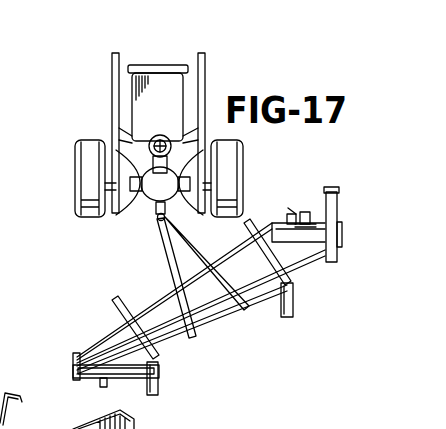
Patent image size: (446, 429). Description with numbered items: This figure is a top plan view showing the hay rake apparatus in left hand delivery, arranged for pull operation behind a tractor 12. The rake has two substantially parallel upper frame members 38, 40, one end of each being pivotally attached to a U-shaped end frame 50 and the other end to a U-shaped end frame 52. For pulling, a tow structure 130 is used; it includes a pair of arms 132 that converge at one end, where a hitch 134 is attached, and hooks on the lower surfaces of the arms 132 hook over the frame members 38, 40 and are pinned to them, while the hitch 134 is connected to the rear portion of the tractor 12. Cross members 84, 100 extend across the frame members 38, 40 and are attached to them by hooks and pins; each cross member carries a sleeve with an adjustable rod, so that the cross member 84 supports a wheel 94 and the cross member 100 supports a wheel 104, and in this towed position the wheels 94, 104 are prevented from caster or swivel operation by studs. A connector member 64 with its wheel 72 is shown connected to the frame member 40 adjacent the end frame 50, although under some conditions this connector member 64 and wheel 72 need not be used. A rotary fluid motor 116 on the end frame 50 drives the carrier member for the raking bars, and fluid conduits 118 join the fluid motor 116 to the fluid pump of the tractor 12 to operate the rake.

The tractor 12 is at (167, 100).
The hitch 134 is at (158, 219).
The upper frame member 38 is at (103, 340).
The upper frame member 40 is at (170, 342).
The U-shaped end frame 52 is at (73, 363).
The U-shaped end frame 50 is at (342, 232).
The connector member 64 is at (339, 212).
The wheel 72 is at (339, 191).
The rotary fluid motor 116 is at (308, 212).
The fluid conduits 118 is at (292, 212).
The tow structure 130 is at (162, 254).
The arms 132 is at (226, 315).
The cross member 84 is at (114, 299).
The cross member 100 is at (257, 222).
The wheel 94 is at (162, 380).
The wheel 104 is at (293, 302).